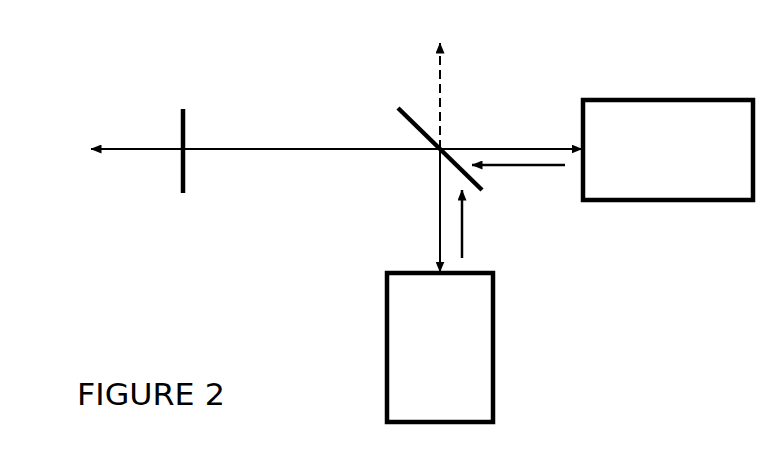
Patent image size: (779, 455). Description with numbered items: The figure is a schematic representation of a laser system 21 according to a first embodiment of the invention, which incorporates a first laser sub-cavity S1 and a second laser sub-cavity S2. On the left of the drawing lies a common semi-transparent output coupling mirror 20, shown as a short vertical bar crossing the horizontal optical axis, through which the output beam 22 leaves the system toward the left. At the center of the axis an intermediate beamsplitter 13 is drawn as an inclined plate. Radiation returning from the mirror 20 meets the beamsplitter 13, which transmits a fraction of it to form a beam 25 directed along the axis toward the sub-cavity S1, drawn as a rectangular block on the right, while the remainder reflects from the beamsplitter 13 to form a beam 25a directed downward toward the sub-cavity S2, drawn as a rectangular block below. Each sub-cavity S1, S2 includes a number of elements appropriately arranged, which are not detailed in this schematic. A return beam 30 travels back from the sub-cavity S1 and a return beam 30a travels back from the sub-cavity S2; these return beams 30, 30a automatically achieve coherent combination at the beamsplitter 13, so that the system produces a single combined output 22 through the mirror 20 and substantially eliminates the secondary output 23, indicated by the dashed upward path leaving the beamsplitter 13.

The intermediate beamsplitter 13 is at (400, 102).
The common semi-transparent output coupling mirror 20 is at (182, 102).
The laser system 21 is at (617, 293).
The output beam 22 is at (110, 135).
The secondary output 23 is at (452, 92).
The beam directed towards sub-cavity S1 25 is at (533, 142).
The beam directed towards sub-cavity S2 25a is at (428, 228).
The return beam from sub-cavity S1 30 is at (527, 173).
The return beam from sub-cavity S2 30a is at (470, 220).
The first laser sub-cavity S1 is at (668, 90).
The second laser sub-cavity S2 is at (377, 365).